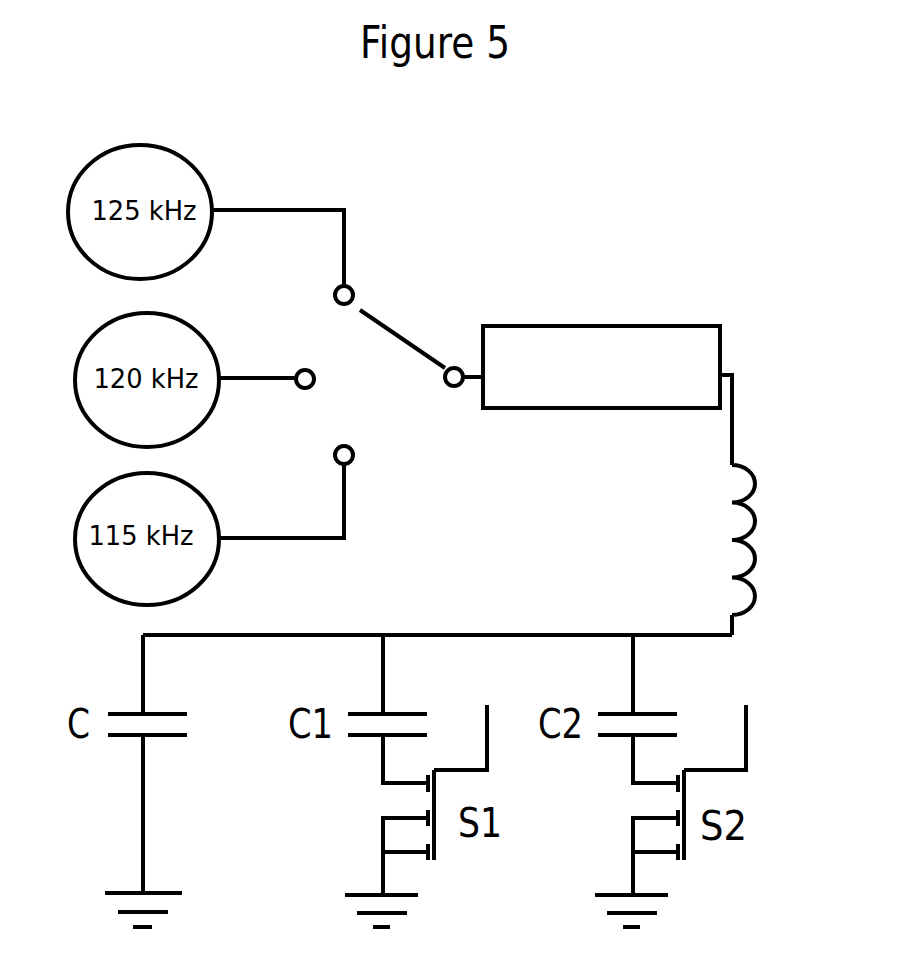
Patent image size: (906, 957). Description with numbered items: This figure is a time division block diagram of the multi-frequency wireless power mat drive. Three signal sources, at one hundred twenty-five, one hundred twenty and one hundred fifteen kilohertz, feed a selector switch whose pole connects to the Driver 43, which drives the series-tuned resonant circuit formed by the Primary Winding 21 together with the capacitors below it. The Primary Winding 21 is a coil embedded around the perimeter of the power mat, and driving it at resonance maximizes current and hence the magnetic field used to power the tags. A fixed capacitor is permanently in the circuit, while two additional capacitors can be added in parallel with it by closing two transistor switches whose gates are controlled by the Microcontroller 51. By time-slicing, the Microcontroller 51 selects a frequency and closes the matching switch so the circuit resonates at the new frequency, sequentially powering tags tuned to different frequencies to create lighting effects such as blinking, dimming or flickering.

The driver 43 is at (601, 367).
The primary winding 21 is at (708, 540).
The microcontroller 51 is at (602, 713).